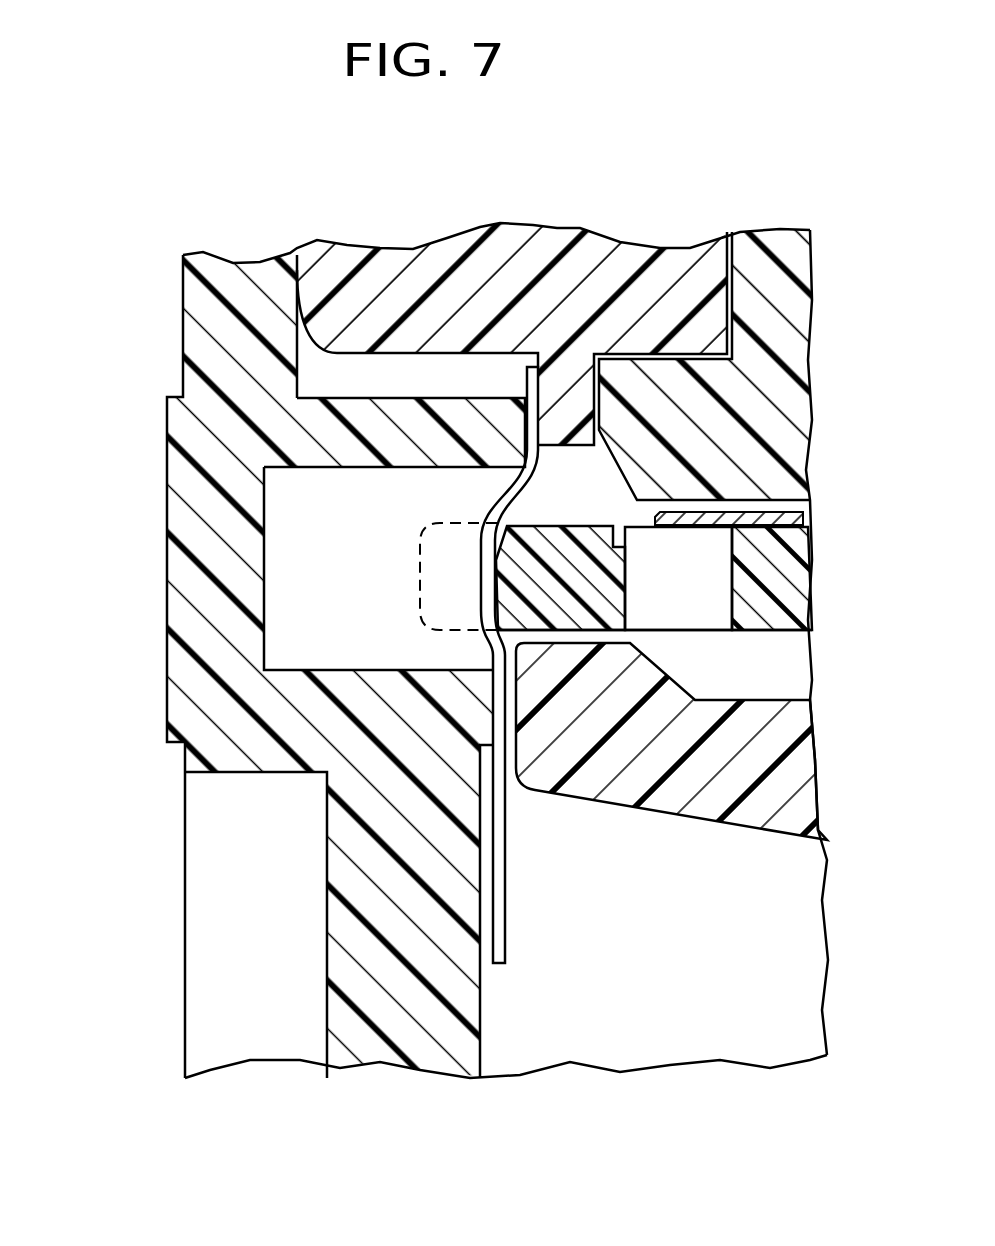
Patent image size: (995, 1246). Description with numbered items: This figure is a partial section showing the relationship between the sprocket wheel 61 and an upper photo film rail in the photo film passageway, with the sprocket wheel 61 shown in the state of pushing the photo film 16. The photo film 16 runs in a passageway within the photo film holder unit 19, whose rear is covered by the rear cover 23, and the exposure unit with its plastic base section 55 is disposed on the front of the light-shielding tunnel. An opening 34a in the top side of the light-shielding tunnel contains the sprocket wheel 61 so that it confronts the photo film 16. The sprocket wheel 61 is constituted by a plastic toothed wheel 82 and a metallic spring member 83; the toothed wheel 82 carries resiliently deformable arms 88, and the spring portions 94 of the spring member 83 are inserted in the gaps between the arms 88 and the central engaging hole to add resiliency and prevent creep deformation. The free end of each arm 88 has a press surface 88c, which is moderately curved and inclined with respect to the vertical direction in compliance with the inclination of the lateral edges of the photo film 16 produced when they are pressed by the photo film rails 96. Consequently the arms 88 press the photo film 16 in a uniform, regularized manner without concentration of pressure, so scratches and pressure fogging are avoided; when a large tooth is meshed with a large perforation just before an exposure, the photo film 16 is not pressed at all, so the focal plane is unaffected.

The rear cover 23 is at (151, 318).
The photo film holder unit 19 is at (392, 318).
The photo film rails 96 is at (460, 420).
The opening 34a is at (575, 468).
The spring member 83 is at (748, 515).
The arms 88 is at (522, 535).
The press surface 88c is at (480, 588).
The spring portions 94 is at (628, 587).
The toothed wheel 82 is at (800, 577).
The sprocket wheel 61 is at (786, 658).
The plastic base section 55 is at (718, 818).
The photo film 16 is at (540, 908).